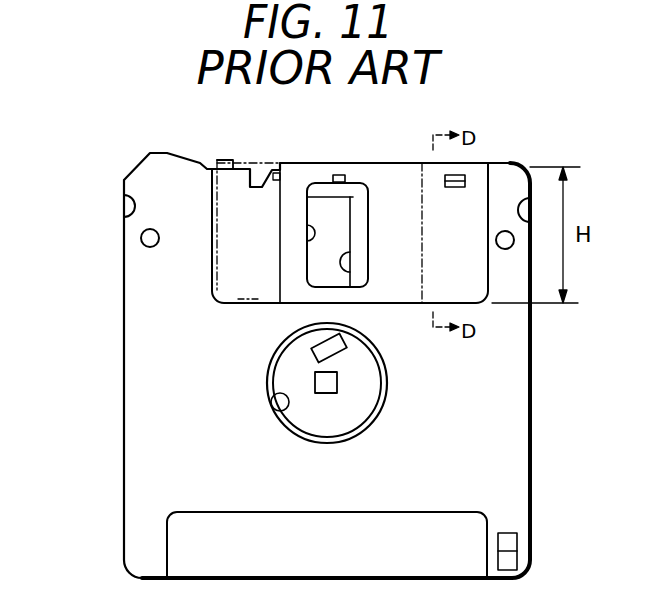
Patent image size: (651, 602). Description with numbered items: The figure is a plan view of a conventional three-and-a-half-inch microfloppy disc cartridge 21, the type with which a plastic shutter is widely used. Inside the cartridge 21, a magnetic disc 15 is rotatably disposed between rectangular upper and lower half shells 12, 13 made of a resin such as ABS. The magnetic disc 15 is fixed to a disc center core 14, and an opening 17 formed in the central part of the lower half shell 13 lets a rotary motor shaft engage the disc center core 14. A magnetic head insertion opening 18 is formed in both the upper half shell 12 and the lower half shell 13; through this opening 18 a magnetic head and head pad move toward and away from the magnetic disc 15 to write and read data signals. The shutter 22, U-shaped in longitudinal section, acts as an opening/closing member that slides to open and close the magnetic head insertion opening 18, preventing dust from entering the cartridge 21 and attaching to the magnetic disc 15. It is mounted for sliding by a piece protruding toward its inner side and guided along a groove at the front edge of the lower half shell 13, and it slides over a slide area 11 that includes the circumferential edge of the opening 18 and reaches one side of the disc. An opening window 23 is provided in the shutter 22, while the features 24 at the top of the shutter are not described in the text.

The slide area 11 is at (236, 192).
The upper half shell 12 is at (290, 365).
The lower half shell 13 is at (148, 349).
The disc center core 14 is at (362, 398).
The magnetic disc 15 is at (332, 228).
The opening 17 is at (285, 410).
The magnetic head insertion opening 18 is at (348, 273).
The microfloppy disc cartridge 21 is at (536, 366).
The shutter 22 is at (393, 175).
The opening window 23 is at (312, 247).
The shutter guide tab 24 is at (346, 175).